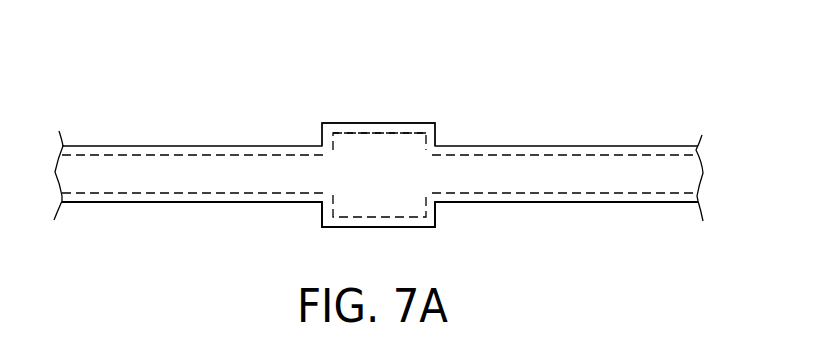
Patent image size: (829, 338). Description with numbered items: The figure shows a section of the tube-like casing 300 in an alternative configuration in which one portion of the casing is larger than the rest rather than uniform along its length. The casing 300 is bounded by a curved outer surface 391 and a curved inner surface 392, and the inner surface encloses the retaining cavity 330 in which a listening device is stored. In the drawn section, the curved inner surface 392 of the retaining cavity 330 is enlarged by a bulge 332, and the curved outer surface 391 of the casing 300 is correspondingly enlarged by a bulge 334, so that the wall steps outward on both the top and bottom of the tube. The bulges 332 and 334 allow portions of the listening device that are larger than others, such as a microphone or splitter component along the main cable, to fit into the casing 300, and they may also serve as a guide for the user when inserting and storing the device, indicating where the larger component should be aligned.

The casing 300 is at (158, 146).
The retaining cavity 330 is at (107, 180).
The bulge in curved inner surface 332 is at (337, 130).
The bulge in curved outer surface 334 is at (363, 128).
The curved outer surface 391 is at (395, 125).
The curved inner surface 392 is at (422, 128).